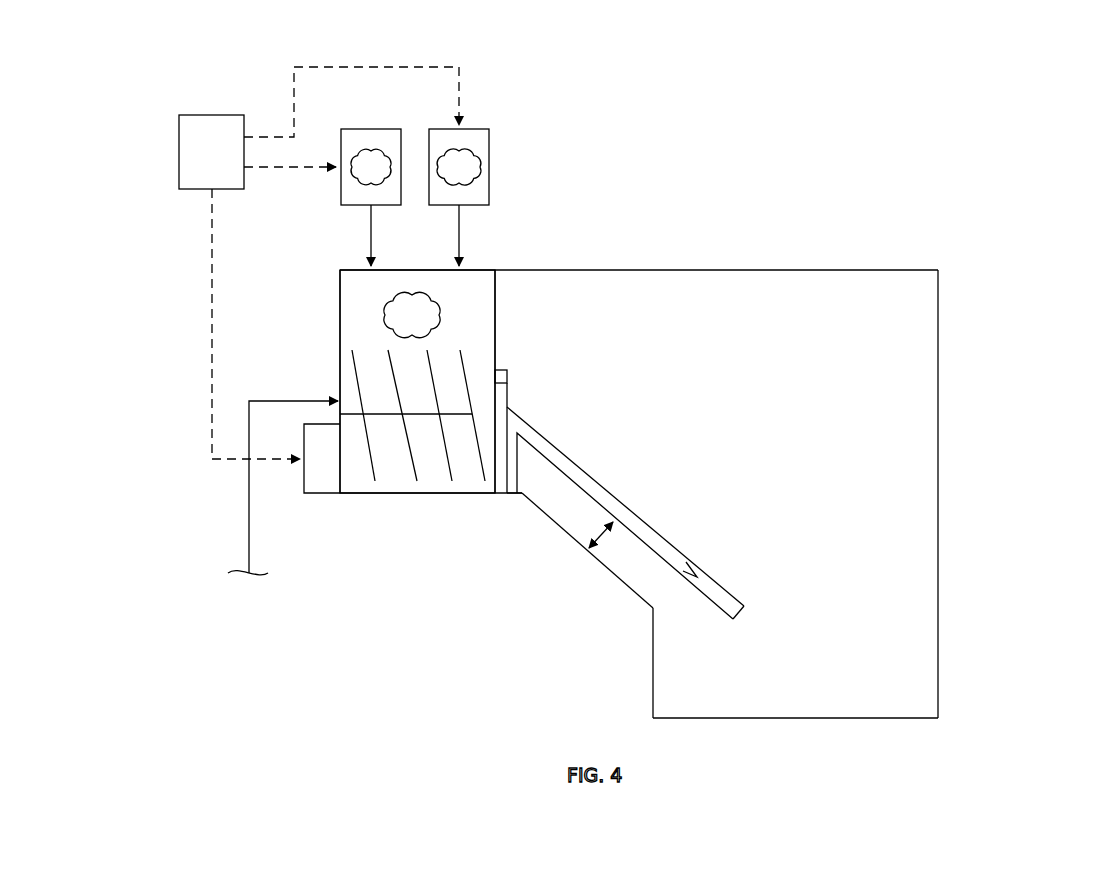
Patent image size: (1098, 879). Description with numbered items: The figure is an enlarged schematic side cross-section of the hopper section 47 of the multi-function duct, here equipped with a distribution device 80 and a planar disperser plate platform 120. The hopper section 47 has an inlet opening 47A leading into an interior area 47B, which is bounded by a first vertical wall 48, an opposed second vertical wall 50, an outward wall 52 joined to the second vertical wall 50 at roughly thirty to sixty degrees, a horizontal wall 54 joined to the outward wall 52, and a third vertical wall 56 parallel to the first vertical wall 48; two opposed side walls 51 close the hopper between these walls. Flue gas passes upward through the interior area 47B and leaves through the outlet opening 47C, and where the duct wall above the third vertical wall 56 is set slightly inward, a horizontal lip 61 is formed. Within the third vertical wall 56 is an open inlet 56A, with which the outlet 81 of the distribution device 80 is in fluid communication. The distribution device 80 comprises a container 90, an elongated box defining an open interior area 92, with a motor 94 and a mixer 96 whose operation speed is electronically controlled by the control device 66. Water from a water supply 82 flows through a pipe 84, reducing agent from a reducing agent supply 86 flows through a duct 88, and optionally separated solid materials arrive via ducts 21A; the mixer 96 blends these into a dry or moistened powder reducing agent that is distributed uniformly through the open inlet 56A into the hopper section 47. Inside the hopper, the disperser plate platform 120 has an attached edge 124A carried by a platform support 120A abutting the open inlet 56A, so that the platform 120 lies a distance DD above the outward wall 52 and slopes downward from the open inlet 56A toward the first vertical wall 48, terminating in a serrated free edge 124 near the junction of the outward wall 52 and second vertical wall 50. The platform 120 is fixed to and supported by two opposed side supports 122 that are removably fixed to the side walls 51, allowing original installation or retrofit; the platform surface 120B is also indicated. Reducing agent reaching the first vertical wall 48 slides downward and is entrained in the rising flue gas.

The hopper section 47 is at (781, 427).
The inlet opening 47A is at (862, 715).
The interior area 47B is at (841, 322).
The outlet opening 47C is at (742, 270).
The first vertical wall 48 is at (938, 445).
The second vertical wall 50 is at (653, 663).
The side walls 51 is at (817, 515).
The outward wall 52 is at (597, 553).
The horizontal wall 54 is at (518, 493).
The third vertical wall 56 is at (495, 297).
The open inlet 56A is at (507, 383).
The horizontal lip 61 is at (568, 270).
The control device 66 is at (214, 115).
The distribution device 80 is at (323, 350).
The outlet 81 is at (493, 482).
The water supply 82 is at (371, 129).
The pipe 84 is at (371, 236).
The reducing agent supply 86 is at (489, 152).
The duct 88 is at (460, 230).
The container 90 is at (340, 375).
The open interior area 92 is at (340, 280).
The motor 94 is at (314, 487).
The mixer 96 is at (372, 465).
The ducts 21A is at (249, 522).
The disperser plate platform 120 is at (640, 510).
The platform support 120A is at (518, 460).
The rod upper surface 120B is at (587, 480).
The side supports 122 is at (732, 598).
The free edge 124 is at (690, 565).
The attached edge 124A is at (507, 407).
The distance DD is at (586, 545).